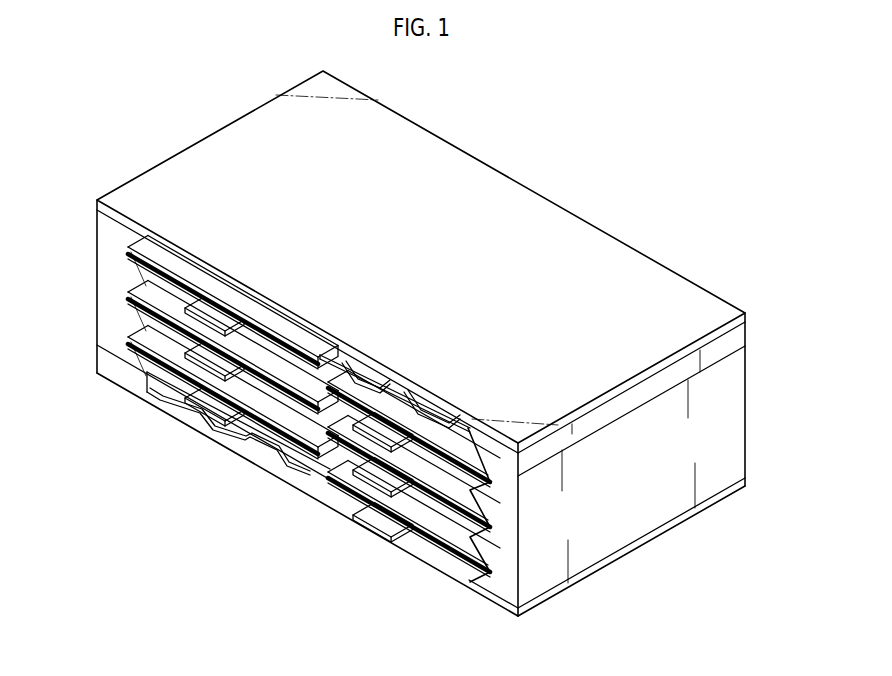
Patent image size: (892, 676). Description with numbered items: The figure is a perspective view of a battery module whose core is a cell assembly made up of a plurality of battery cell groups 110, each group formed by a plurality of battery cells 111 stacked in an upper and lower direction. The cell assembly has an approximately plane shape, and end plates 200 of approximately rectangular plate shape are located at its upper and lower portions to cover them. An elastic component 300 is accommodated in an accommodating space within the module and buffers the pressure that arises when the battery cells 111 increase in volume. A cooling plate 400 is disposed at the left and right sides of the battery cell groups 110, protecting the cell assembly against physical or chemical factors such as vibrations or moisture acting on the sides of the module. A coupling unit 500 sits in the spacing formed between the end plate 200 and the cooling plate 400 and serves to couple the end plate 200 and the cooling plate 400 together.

The battery cell group 110 is at (425, 637).
The battery cell 111 is at (452, 438).
The end plate 200 is at (510, 198).
The elastic component 300 is at (220, 437).
The cooling plate 400 is at (108, 287).
The coupling unit 500 is at (108, 360).